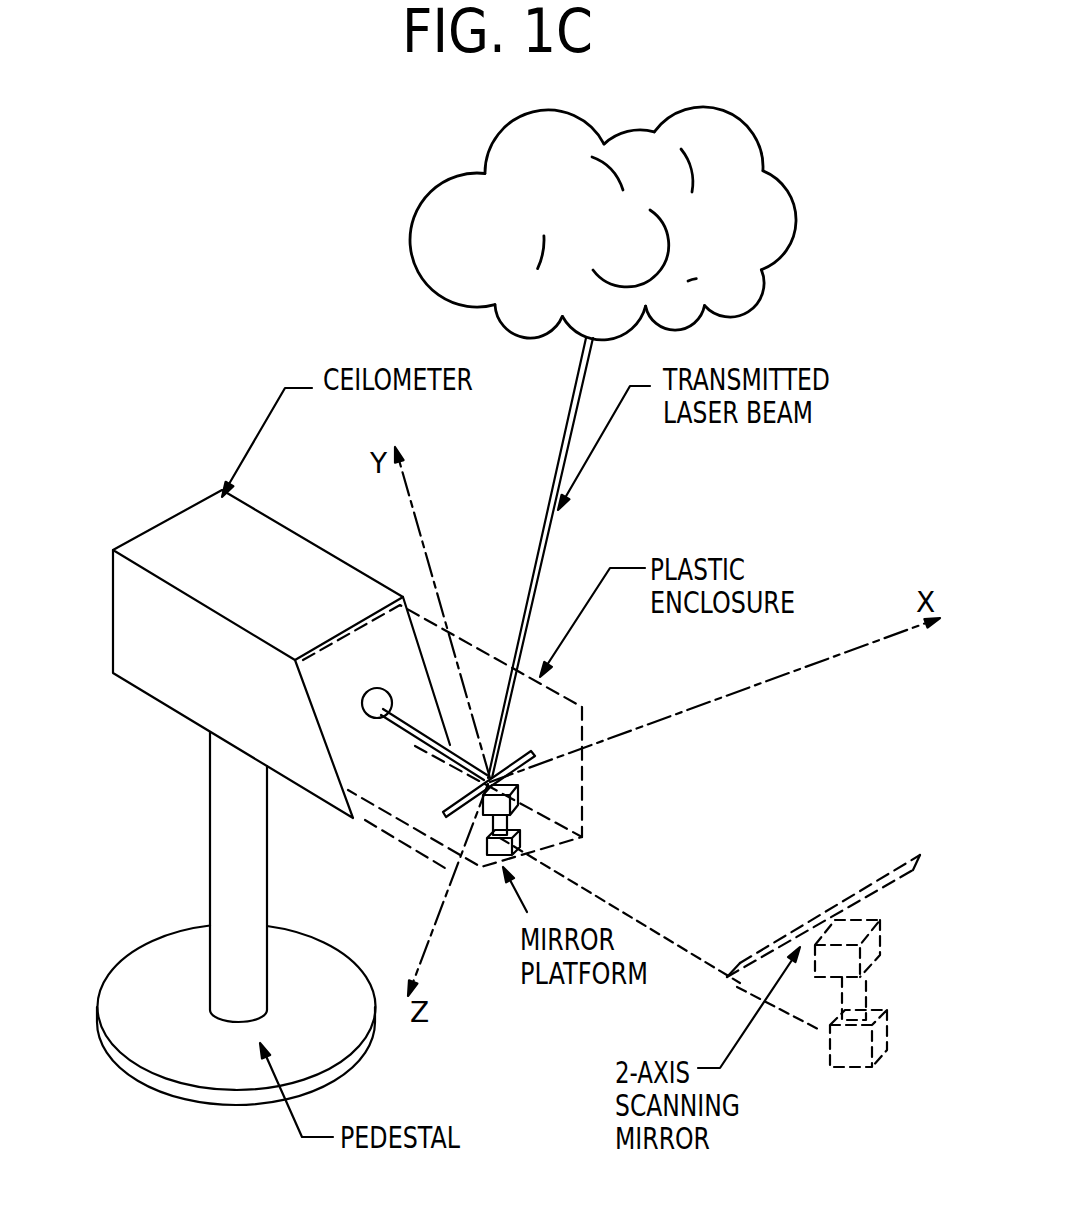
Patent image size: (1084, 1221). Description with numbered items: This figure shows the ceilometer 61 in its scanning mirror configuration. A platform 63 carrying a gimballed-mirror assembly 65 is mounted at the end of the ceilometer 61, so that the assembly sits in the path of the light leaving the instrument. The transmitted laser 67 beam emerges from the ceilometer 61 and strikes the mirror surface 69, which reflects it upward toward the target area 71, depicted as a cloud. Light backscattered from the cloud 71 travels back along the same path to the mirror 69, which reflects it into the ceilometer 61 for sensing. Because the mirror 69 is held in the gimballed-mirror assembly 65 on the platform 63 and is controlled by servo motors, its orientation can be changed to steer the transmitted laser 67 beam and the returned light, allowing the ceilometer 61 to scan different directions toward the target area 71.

The ceilometer 61 is at (170, 452).
The platform 63 is at (475, 868).
The gimballed-mirror assembly 65 is at (570, 793).
The transmitted laser beam 67 is at (553, 545).
The mirror 69 is at (531, 752).
The target area (cloud) 71 is at (762, 263).